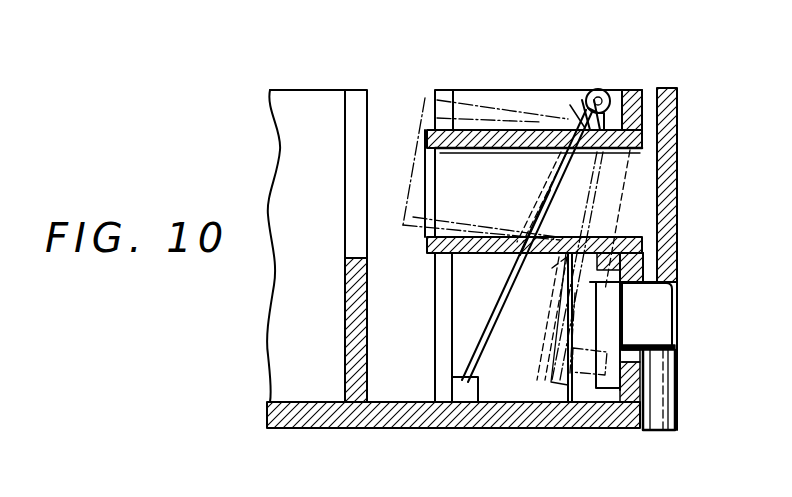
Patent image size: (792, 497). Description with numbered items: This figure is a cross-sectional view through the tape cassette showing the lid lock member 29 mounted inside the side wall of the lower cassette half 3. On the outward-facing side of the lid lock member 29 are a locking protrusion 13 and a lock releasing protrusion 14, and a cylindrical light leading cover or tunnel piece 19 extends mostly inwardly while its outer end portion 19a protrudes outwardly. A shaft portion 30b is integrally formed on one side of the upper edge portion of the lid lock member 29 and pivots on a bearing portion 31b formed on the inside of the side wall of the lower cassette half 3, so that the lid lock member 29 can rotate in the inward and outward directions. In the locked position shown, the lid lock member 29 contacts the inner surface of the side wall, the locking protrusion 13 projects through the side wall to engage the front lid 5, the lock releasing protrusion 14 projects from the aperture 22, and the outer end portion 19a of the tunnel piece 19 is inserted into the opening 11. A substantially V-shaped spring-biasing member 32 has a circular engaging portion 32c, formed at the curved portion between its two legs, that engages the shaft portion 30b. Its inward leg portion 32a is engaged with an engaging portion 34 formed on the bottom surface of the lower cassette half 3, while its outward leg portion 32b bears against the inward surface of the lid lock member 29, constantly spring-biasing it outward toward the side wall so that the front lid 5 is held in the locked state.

The lower cassette half 3 is at (322, 430).
The front lid 5 is at (668, 90).
The opening 11 is at (672, 260).
The locking protrusion 13 is at (650, 365).
The lock releasing protrusion 14 is at (655, 323).
The cylindrical light leading cover or tunnel piece 19 is at (485, 130).
The outer end portion of tunnel piece 19a is at (644, 143).
The aperture 22 is at (638, 292).
The lid lock member 29 is at (672, 344).
The shaft portion 30b is at (605, 88).
The bearing portion 31b is at (577, 108).
The spring-biasing member 32 is at (478, 333).
The inward leg portion 32a is at (500, 298).
The outward leg portion 32b is at (569, 267).
The circular engaging portion 32c is at (596, 88).
The engaging portion 34 is at (463, 393).